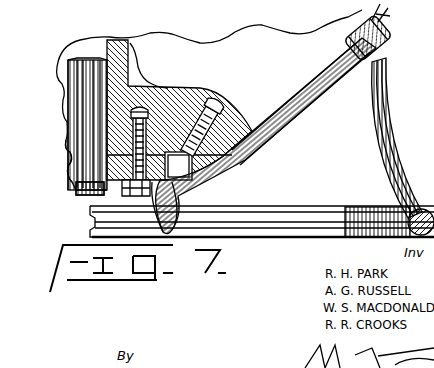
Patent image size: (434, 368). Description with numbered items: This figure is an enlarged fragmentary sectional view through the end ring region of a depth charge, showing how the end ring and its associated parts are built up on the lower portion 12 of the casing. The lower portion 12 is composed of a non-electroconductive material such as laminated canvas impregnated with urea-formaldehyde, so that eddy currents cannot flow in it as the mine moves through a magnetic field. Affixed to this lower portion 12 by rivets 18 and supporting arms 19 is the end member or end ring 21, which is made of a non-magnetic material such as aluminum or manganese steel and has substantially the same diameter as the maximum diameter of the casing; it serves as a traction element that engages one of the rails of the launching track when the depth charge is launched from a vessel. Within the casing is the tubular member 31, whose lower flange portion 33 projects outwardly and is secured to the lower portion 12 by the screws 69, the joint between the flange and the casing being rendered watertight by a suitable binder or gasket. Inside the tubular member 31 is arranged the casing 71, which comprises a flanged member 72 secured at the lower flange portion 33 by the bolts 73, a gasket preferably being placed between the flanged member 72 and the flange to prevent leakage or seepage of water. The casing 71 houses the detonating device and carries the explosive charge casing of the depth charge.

The lower portion of the casing 12 is at (386, 20).
The rivets 18 is at (352, 30).
The supporting arms 19 is at (178, 190).
The end ring 21 is at (338, 209).
The tubular member 31 is at (134, 52).
The lower flange portion 33 is at (229, 108).
The screws 69 is at (235, 168).
The casing 71 is at (66, 72).
The flanged member 72 is at (72, 152).
The bolts 73 is at (105, 193).